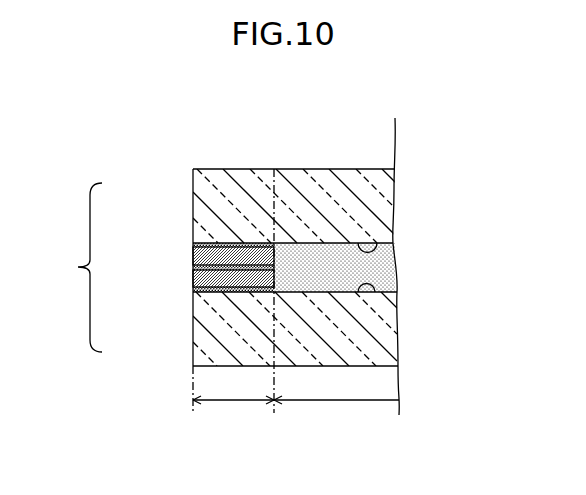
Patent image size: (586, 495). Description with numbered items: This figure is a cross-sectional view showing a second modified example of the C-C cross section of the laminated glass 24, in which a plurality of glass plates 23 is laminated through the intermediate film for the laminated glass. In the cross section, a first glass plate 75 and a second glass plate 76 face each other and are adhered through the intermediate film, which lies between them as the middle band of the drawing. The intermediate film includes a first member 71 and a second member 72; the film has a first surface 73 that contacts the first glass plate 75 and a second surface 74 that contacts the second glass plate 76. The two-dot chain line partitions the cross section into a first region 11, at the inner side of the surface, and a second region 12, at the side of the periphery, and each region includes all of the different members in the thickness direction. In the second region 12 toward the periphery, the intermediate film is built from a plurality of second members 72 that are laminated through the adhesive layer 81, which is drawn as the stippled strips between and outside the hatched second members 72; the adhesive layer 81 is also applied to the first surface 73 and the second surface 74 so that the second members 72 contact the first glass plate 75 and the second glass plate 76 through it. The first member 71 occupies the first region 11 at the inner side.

The laminated glass 24 is at (170, 165).
The glass plates 23 is at (72, 267).
The first glass plate 75 is at (217, 207).
The second glass plate 76 is at (218, 333).
The first member 71 is at (305, 267).
The second member 72 is at (245, 280).
The first surface 73 is at (359, 243).
The second surface 74 is at (358, 294).
The adhesive layer 81 is at (193, 245).
The second region 12 is at (233, 299).
The first region 11 is at (336, 412).